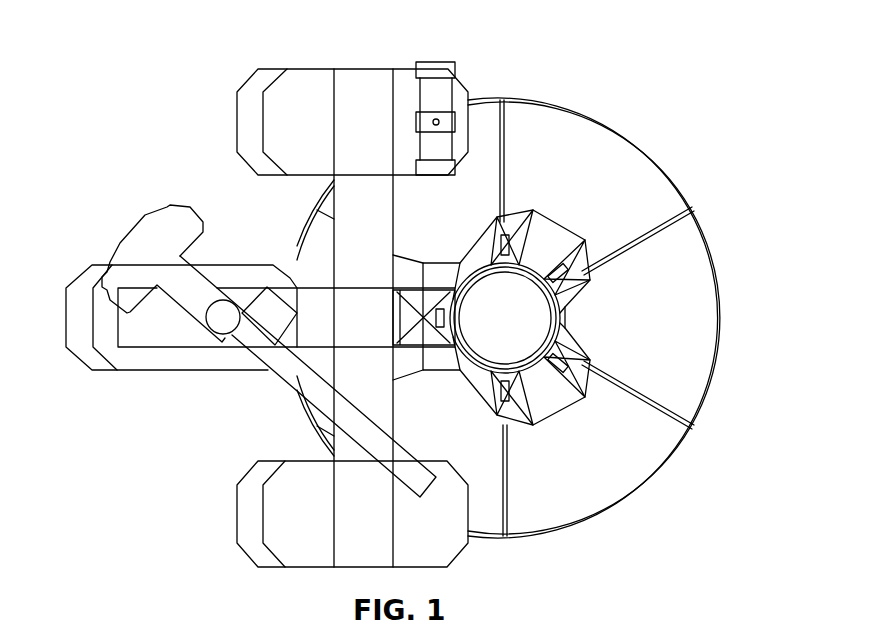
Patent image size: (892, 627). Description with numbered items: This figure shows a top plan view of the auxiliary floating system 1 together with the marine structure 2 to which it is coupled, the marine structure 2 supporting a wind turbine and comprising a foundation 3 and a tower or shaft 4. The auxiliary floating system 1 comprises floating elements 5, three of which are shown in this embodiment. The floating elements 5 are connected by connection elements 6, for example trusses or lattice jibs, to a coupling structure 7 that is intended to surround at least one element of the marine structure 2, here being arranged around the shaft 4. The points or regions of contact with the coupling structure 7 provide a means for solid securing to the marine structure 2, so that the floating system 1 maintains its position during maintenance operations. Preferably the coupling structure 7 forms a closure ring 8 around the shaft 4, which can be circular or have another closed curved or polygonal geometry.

The auxiliary floating system 1 is at (198, 183).
The marine structure 2 is at (668, 124).
The foundation 3 is at (620, 477).
The tower or shaft 4 is at (565, 308).
The floating element 5 is at (246, 529).
The connection element 6 is at (332, 447).
The coupling structure 7 is at (400, 352).
The closure ring 8 is at (537, 212).